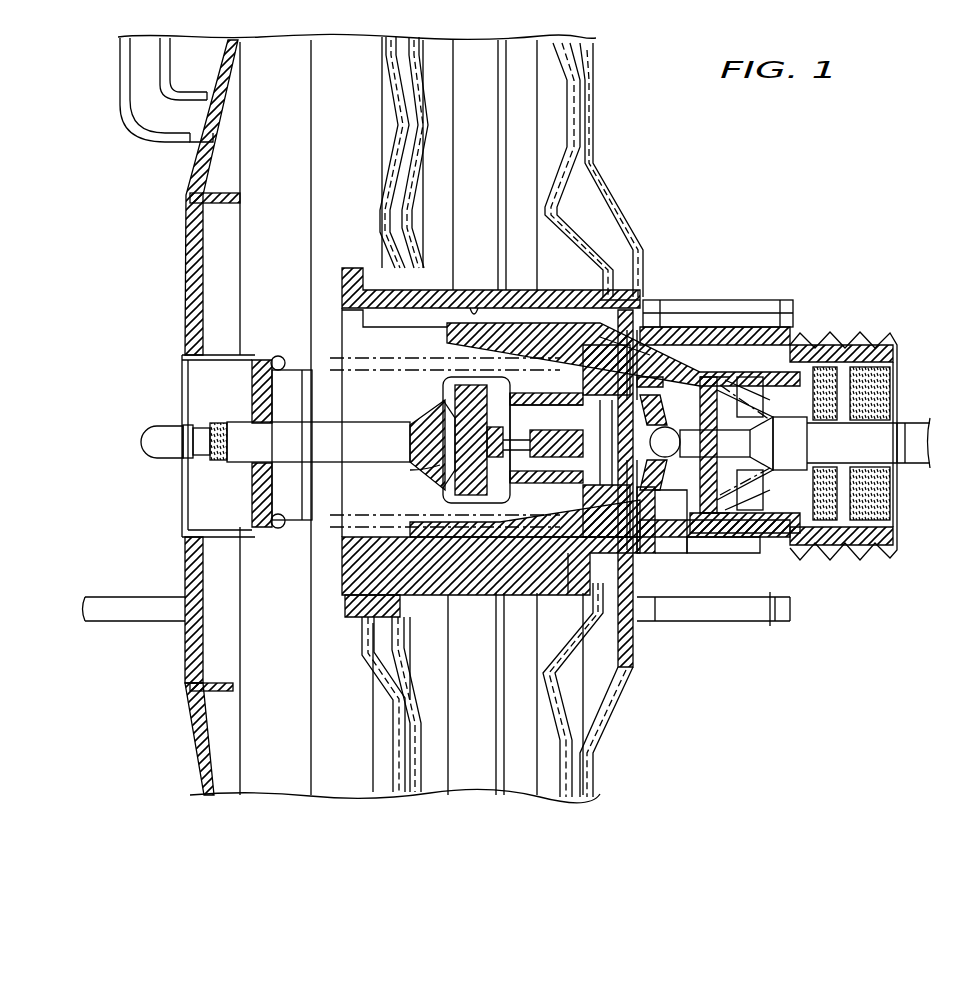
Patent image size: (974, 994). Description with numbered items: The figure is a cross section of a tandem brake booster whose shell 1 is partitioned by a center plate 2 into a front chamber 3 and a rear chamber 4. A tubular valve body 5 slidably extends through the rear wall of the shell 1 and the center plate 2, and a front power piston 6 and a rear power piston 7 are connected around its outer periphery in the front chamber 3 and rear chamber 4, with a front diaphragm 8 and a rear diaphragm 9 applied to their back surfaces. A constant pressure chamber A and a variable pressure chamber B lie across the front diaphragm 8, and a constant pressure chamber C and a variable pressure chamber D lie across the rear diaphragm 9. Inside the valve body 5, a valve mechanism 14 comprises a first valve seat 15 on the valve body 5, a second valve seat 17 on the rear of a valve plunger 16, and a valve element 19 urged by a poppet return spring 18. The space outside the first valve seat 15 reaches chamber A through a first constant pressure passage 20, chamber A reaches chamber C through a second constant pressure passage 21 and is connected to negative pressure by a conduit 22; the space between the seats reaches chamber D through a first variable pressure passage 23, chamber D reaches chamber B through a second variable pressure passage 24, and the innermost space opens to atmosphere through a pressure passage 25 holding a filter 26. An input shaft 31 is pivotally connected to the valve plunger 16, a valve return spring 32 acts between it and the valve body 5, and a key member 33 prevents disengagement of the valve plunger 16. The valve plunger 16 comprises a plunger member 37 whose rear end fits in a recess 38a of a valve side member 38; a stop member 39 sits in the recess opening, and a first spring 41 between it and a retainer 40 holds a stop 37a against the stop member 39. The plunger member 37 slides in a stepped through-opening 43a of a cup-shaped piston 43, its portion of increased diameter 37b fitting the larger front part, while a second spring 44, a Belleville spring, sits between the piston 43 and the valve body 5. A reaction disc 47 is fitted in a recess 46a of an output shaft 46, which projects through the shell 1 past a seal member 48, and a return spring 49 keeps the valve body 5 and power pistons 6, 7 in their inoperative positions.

The shell 1 is at (198, 758).
The center plate 2 is at (428, 785).
The front chamber 3 is at (283, 780).
The rear chamber 4 is at (485, 780).
The valve body 5 is at (345, 585).
The front power piston 6 is at (365, 672).
The rear power piston 7 is at (555, 695).
The front diaphragm 8 is at (385, 702).
The rear diaphragm 9 is at (567, 720).
The valve mechanism 14 is at (750, 625).
The first valve seat 15 is at (700, 340).
The valve plunger 16 is at (660, 540).
The second valve seat 17 is at (650, 380).
The poppet return spring 18 is at (775, 340).
The valve element 19 is at (730, 370).
The first constant pressure passage 20 is at (668, 300).
The second constant pressure passage 21 is at (478, 305).
The conduit 22 is at (140, 115).
The first variable pressure passage 23 is at (715, 525).
The second variable pressure passage 24 is at (475, 595).
The pressure passage 25 is at (825, 540).
The filter 26 is at (875, 540).
The input shaft 31 is at (915, 462).
The valve return spring 32 is at (820, 337).
The key member 33 is at (637, 625).
The plunger member 37 is at (458, 480).
The stop 37a is at (743, 443).
The portion of increased diameter 37b is at (408, 440).
The valve side member 38 is at (665, 442).
The recess 38a is at (612, 390).
The stop member 39 is at (580, 412).
The retainer 40 is at (543, 460).
The first spring 41 is at (568, 594).
The cup-shaped piston 43 is at (545, 330).
The stepped through-opening 43a is at (447, 380).
The second spring 44 is at (592, 290).
The output shaft 46 is at (157, 440).
The recess 46a is at (440, 412).
The reaction disc 47 is at (440, 457).
The seal member 48 is at (255, 400).
The return spring 49 is at (290, 345).
The constant pressure chamber A is at (273, 714).
The variable pressure chamber B is at (395, 762).
The constant pressure chamber C is at (468, 722).
The variable pressure chamber D is at (590, 693).